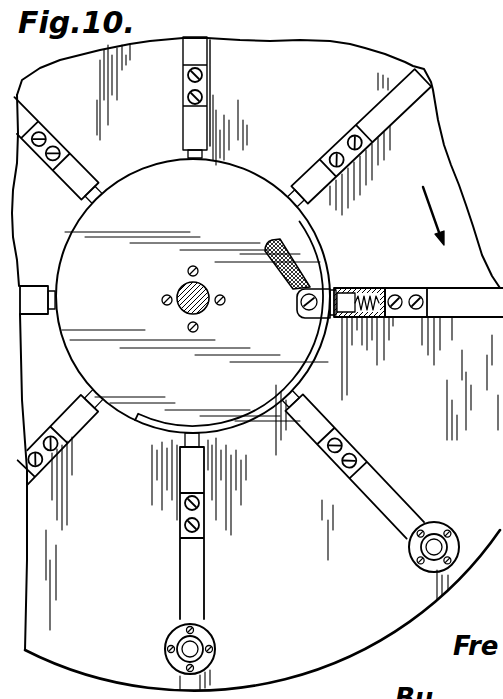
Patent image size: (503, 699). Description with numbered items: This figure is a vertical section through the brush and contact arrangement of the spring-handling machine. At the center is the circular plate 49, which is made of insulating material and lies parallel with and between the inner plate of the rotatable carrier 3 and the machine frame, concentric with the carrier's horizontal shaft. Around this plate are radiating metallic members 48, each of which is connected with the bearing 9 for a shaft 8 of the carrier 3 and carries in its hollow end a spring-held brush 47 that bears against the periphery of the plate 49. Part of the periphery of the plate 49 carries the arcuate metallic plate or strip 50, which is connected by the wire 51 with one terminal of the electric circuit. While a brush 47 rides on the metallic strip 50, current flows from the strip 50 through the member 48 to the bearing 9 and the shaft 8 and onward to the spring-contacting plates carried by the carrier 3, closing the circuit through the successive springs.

The rotatable carrier 3 is at (463, 215).
The shaft 8 is at (193, 646).
The bearing 9 is at (206, 292).
The spring-held brush 47 is at (103, 193).
The metallic member 48 is at (72, 181).
The circular plate 49 is at (304, 315).
The arcuate metallic plate or strip 50 is at (271, 410).
The wire 51 is at (286, 246).